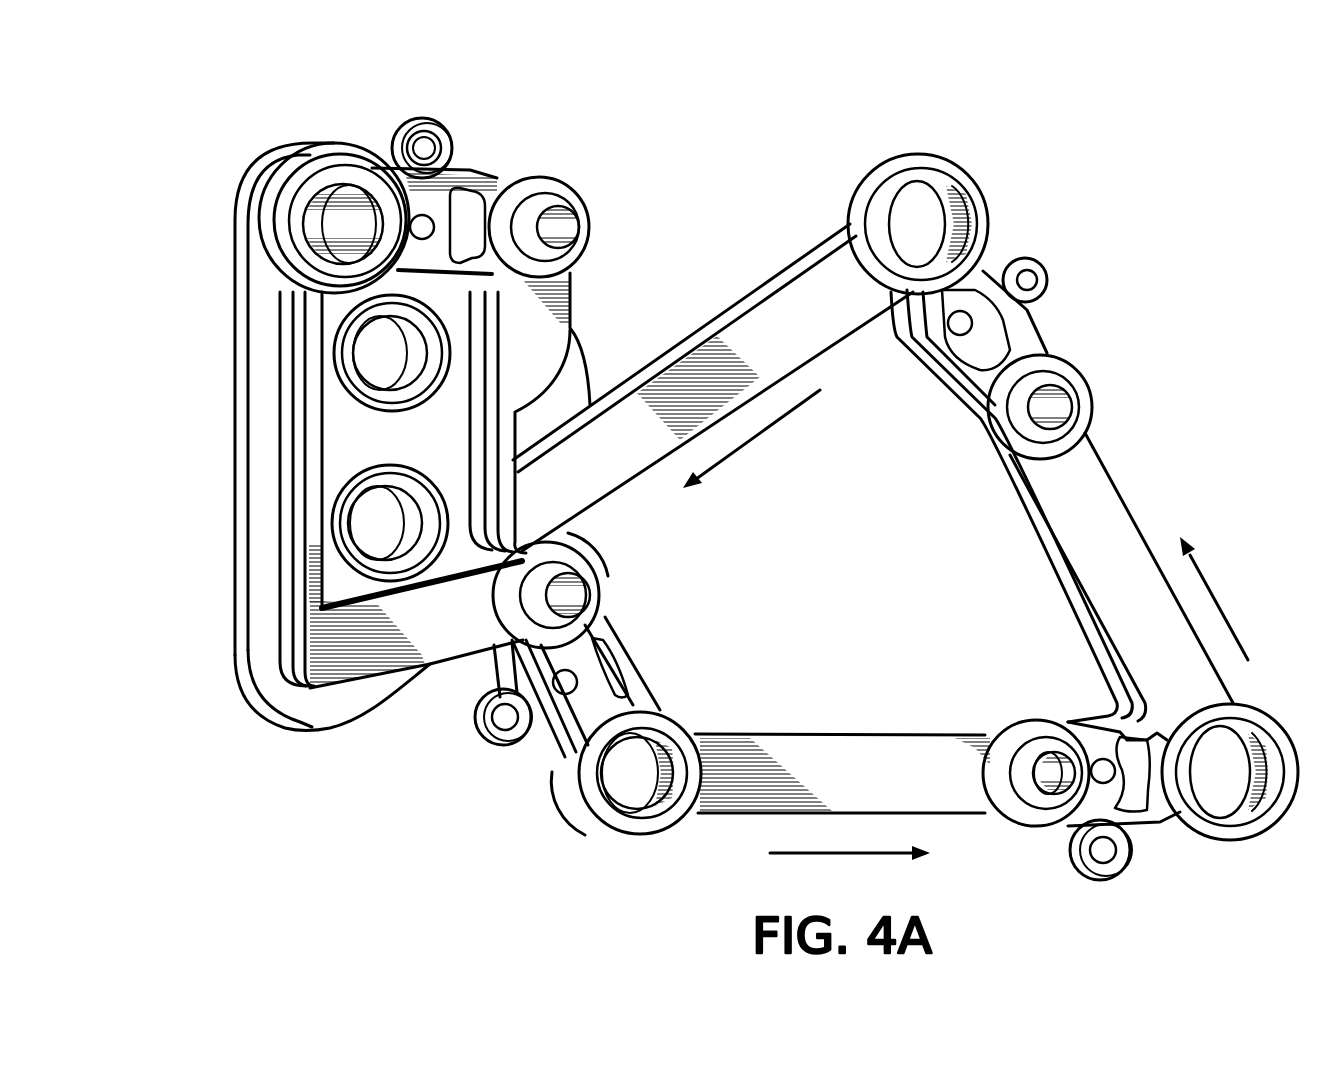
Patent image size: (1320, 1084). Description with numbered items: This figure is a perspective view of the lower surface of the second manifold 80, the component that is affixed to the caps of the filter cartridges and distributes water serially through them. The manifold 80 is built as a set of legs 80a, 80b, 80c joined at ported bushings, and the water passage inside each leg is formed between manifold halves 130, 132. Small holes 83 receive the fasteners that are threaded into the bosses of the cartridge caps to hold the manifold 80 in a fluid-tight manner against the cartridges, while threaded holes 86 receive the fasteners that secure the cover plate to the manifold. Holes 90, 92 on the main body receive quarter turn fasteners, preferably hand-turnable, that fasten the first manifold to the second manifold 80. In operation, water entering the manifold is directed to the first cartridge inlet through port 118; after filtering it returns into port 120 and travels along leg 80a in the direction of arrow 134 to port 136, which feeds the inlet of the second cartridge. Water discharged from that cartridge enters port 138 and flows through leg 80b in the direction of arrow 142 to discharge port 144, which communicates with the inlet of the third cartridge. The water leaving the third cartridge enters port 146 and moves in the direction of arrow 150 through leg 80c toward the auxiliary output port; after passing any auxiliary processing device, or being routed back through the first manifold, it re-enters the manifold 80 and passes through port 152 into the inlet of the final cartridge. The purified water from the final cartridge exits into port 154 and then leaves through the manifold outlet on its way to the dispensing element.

The second manifold 80 is at (735, 492).
The manifold leg 80a is at (856, 734).
The manifold leg 80b is at (1062, 548).
The manifold leg 80c is at (728, 305).
The holes 83 is at (430, 225).
The threaded holes 86 is at (420, 148).
The hole 90 is at (399, 544).
The hole 92 is at (402, 374).
The port 118 is at (598, 592).
The port 120 is at (636, 792).
The manifold half 130 is at (1053, 573).
The manifold half 132 is at (1037, 517).
The arrow 134 is at (823, 856).
The port 136 is at (1030, 722).
The port 138 is at (1228, 792).
The arrow 142 is at (1208, 585).
The discharge port 144 is at (1052, 408).
The port 146 is at (924, 246).
The arrow 150 is at (757, 430).
The port 152 is at (572, 228).
The port 154 is at (318, 230).